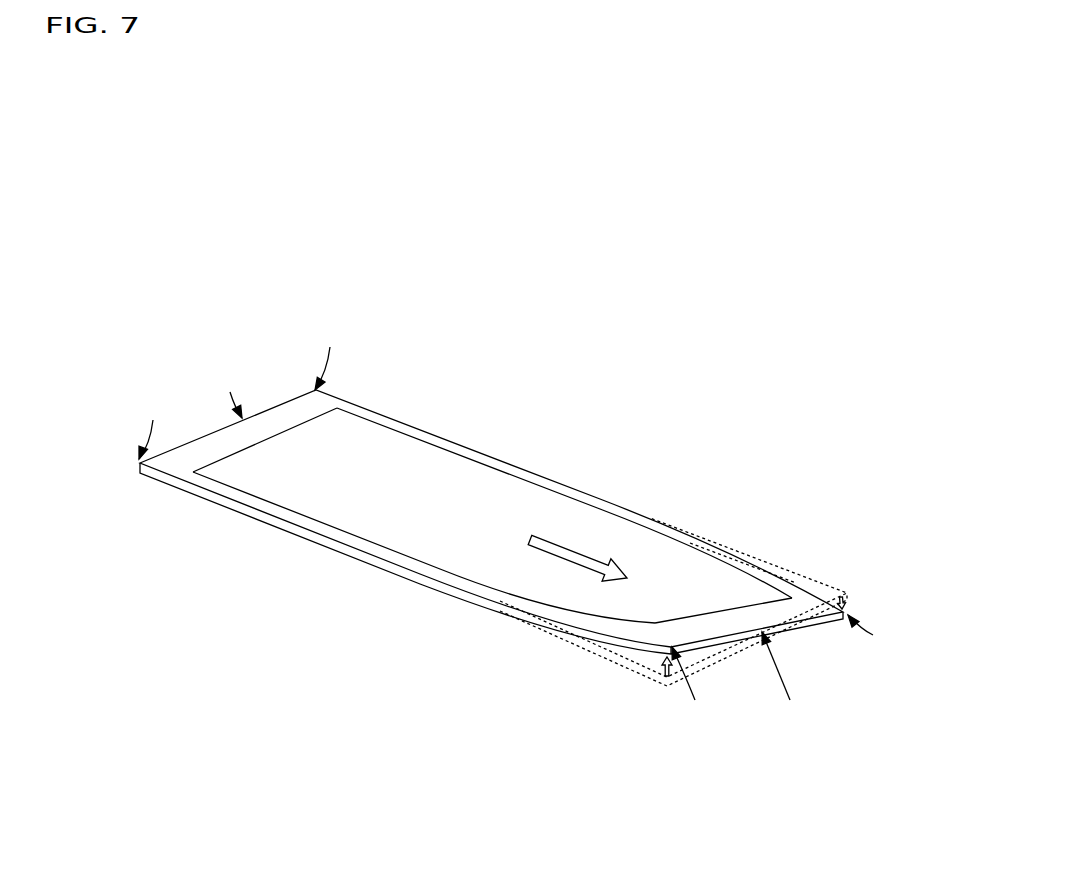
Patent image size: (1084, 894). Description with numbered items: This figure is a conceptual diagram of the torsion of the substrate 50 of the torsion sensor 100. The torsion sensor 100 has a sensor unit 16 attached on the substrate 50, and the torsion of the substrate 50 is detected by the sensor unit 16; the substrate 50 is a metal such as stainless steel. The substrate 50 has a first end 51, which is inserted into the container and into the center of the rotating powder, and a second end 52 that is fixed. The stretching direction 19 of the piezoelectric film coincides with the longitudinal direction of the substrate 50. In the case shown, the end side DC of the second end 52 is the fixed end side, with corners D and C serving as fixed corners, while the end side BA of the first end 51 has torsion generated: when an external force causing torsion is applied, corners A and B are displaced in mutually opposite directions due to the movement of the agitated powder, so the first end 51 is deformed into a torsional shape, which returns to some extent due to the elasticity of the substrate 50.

The torsion sensor 100 is at (782, 450).
The substrate 50 is at (422, 427).
The sensor unit 16 is at (488, 492).
The stretching direction 19 is at (582, 556).
The first end 51 is at (710, 627).
The second end 52 is at (297, 410).